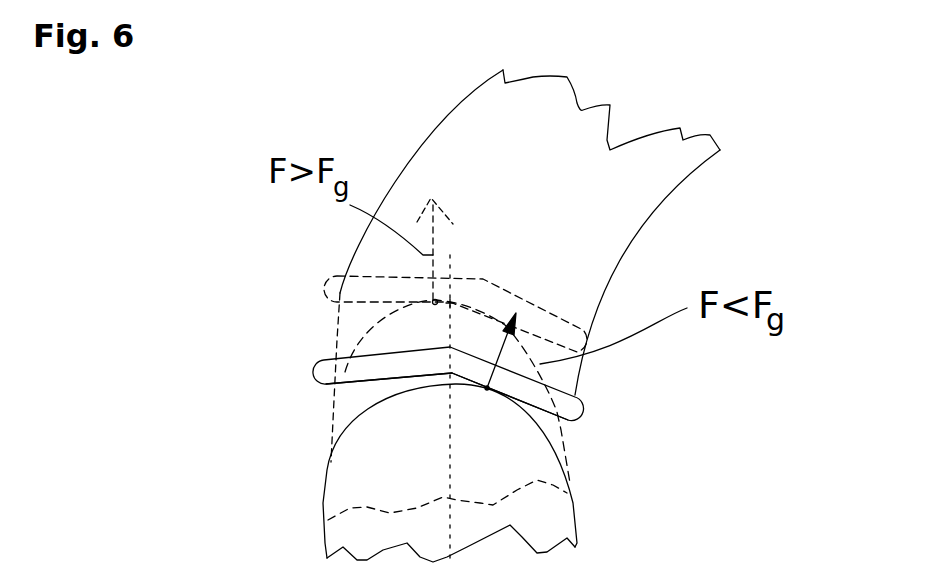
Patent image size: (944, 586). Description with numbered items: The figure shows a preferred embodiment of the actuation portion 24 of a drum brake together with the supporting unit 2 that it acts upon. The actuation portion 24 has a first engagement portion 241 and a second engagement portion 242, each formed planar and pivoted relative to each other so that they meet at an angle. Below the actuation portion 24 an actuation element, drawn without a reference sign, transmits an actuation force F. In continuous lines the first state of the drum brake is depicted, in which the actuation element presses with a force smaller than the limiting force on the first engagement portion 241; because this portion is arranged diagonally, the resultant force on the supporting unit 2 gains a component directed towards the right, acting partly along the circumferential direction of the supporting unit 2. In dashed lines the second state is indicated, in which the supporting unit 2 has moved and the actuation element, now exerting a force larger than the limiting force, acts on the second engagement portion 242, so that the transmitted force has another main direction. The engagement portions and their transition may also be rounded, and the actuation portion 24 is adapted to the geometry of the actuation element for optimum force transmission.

The supporting unit 2 is at (638, 207).
The actuation portion 24 is at (576, 333).
The first engagement portion 241 is at (540, 418).
The second engagement portion 242 is at (380, 383).